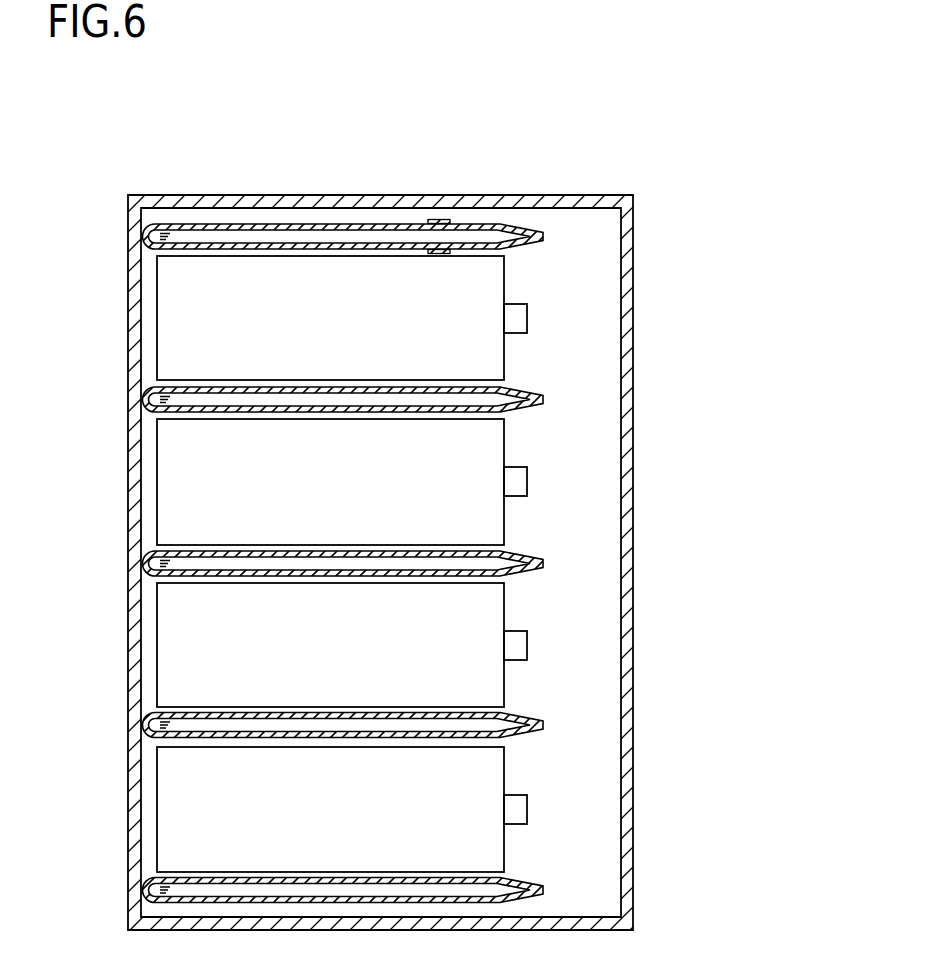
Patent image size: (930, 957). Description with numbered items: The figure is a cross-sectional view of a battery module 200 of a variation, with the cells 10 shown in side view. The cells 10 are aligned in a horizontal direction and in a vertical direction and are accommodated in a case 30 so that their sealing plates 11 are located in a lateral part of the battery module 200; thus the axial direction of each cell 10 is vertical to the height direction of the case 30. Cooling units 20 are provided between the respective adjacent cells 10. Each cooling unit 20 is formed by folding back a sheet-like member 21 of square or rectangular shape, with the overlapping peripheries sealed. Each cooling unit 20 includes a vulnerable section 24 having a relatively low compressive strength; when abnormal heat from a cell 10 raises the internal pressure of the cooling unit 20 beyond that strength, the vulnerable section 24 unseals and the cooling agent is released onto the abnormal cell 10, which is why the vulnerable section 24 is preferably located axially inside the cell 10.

The battery module 200 is at (593, 133).
The case 30 is at (627, 868).
The cell 10 is at (190, 310).
The sealing plate 11 is at (528, 320).
The cooling unit 20 is at (553, 238).
The sheet-like member 21 is at (232, 225).
The vulnerable section 24 is at (437, 219).